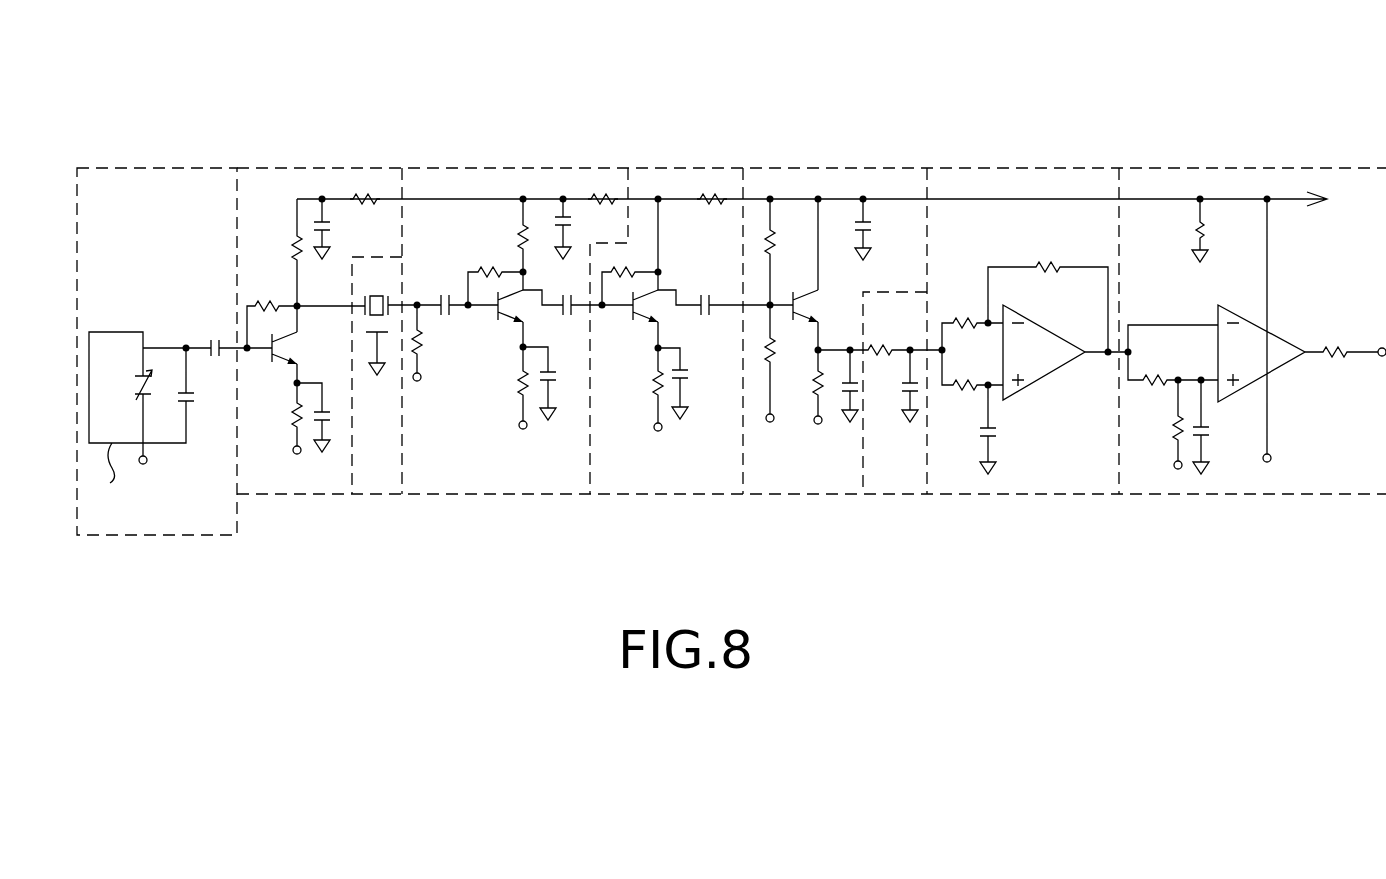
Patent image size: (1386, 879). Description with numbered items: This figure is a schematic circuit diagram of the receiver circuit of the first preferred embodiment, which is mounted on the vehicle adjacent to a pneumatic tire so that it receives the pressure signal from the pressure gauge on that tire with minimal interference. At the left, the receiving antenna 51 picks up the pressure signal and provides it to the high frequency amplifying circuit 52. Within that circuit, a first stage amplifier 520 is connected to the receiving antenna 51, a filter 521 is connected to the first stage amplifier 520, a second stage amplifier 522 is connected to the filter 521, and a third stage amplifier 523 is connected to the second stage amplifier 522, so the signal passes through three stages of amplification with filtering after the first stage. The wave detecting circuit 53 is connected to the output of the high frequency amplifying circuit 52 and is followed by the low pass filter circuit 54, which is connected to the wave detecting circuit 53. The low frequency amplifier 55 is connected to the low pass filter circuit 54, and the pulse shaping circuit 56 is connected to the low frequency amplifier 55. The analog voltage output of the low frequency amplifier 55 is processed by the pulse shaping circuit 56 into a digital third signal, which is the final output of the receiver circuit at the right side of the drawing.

The receiving antenna 51 is at (163, 177).
The high frequency amplifying circuit 52 is at (332, 78).
The first stage amplifier 520 is at (300, 183).
The filter 521 is at (376, 255).
The second stage amplifier 522 is at (462, 182).
The third stage amplifier 523 is at (657, 199).
The wave detecting circuit 53 is at (803, 183).
The low pass filter circuit 54 is at (902, 473).
The low frequency amplifier 55 is at (992, 177).
The pulse shaping circuit 56 is at (1187, 178).